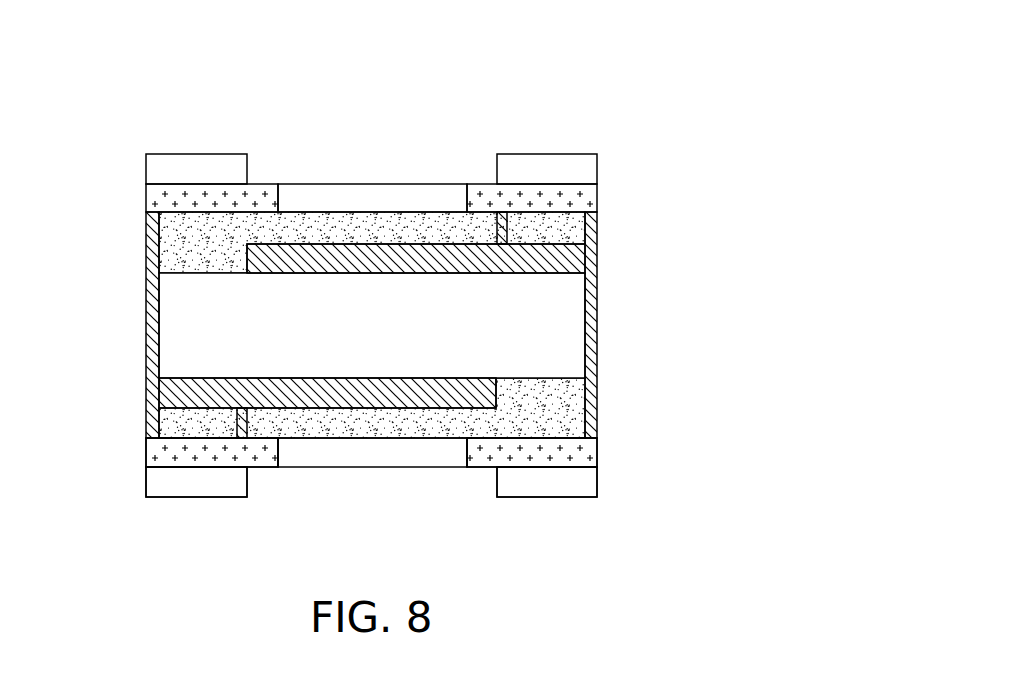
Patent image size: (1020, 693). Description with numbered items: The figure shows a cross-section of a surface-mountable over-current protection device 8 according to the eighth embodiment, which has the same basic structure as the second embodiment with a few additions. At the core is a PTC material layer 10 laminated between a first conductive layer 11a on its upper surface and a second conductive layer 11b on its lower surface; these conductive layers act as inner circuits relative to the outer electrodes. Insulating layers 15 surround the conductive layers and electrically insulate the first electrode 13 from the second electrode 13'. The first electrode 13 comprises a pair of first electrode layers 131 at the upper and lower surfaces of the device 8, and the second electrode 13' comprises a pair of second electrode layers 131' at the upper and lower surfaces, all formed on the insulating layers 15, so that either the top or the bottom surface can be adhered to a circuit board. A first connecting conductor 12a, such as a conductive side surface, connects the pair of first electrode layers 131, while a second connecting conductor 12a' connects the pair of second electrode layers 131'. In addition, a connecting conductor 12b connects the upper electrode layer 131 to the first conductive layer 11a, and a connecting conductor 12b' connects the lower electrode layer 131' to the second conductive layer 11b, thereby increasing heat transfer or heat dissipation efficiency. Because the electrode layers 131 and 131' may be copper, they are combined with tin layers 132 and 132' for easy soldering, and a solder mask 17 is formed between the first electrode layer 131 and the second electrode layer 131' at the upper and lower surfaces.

The surface-mountable over-current protection device 8 is at (597, 130).
The PTC material layer 10 is at (552, 337).
The first conductive layer 11a is at (383, 258).
The second conductive layer 11b is at (432, 395).
The first connecting conductor 12a is at (633, 325).
The second connecting conductor 12a' is at (108, 325).
The connecting conductor 12b is at (589, 229).
The connecting conductor 12b' is at (152, 423).
The first electrode 13 is at (532, 497).
The second electrode 13' is at (212, 497).
The first electrode layer 131 is at (574, 326).
The second electrode layer 131' is at (168, 325).
The tin layer 132 is at (589, 299).
The tin layer 132' is at (152, 298).
The insulating layer 15 is at (325, 228).
The solder mask 17 is at (440, 197).